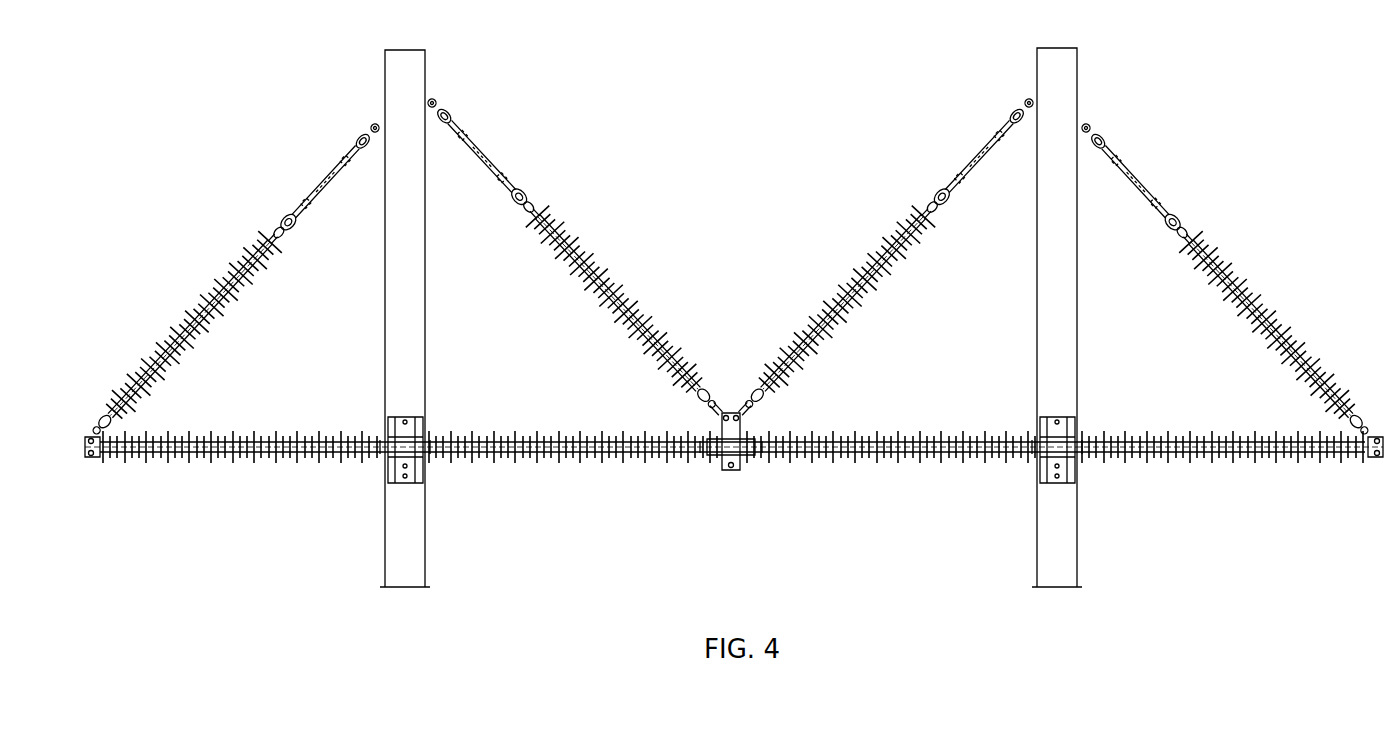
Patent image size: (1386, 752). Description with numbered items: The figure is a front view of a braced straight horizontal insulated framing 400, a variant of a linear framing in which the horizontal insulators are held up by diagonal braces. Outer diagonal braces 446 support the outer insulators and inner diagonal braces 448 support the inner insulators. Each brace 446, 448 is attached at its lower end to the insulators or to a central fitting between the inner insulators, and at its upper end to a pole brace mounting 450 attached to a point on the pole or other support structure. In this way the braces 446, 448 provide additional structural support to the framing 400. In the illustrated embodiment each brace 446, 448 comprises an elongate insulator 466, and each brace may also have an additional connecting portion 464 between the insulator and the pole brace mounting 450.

The braced linear framing 400 is at (1262, 73).
The outer diagonal brace 446 is at (258, 225).
The inner diagonal brace 448 is at (605, 250).
The pole brace mounting 450 is at (370, 124).
The connecting portion 464 is at (318, 180).
The elongate insulator 466 is at (178, 307).